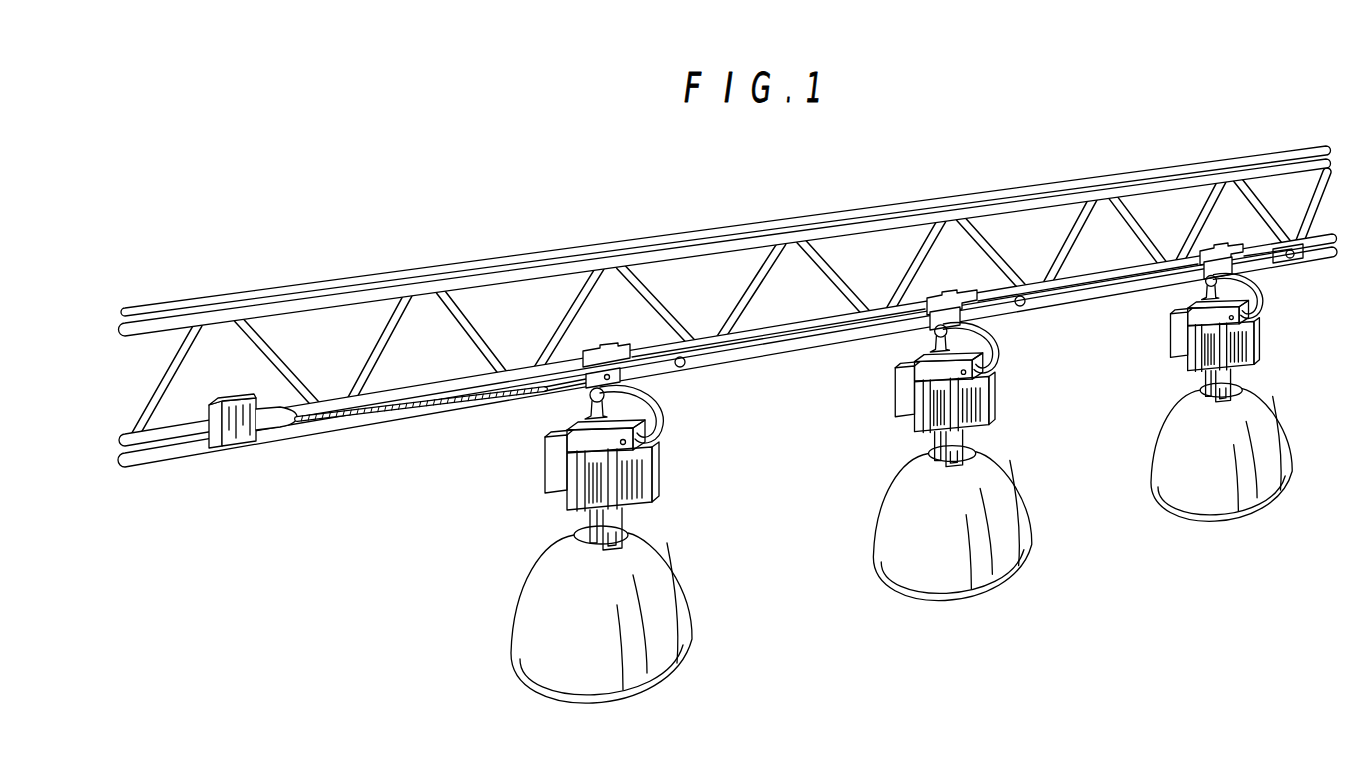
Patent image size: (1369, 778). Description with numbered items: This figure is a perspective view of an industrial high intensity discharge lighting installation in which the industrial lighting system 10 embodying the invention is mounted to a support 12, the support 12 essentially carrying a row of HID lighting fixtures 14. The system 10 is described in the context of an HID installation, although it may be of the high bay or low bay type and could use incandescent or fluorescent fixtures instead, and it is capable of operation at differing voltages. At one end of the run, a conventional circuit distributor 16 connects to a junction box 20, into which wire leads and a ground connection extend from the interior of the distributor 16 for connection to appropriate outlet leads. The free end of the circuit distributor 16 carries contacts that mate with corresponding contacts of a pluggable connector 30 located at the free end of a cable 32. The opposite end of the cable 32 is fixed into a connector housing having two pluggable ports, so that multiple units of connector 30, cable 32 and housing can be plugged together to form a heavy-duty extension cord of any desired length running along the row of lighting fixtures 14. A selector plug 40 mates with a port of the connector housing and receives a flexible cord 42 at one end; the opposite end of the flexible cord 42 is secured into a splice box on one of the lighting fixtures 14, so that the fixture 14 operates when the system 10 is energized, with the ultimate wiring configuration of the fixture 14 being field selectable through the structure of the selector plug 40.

The industrial lighting system 10 is at (823, 188).
The support 12 is at (547, 254).
The HID lighting fixtures 14 is at (660, 594).
The circuit distributor 16 is at (267, 432).
The junction box 20 is at (235, 406).
The pluggable connector 30 is at (596, 349).
The cable 32 is at (380, 428).
The selector plug 40 is at (973, 316).
The flexible cord 42 is at (660, 420).